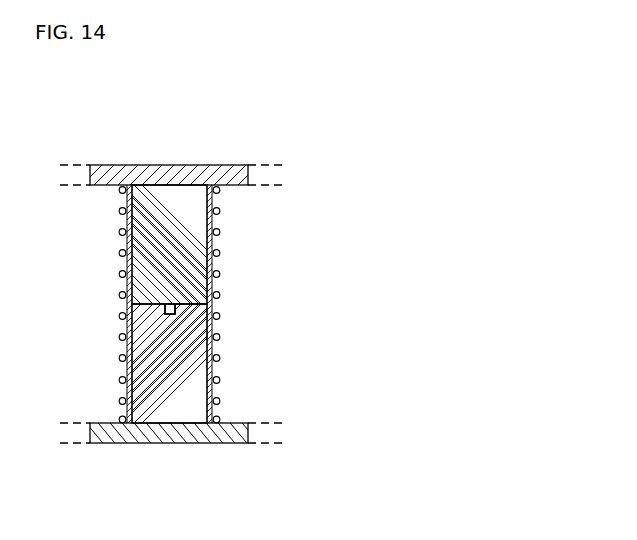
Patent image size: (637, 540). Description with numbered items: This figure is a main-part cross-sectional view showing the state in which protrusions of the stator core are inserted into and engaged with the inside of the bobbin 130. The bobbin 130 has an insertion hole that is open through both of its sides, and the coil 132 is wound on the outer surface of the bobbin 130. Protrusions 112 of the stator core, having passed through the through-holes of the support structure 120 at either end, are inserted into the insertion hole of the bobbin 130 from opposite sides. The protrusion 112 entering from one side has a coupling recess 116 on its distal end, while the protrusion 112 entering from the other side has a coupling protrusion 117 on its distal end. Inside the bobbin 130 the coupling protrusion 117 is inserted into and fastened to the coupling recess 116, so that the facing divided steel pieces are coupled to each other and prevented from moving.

The protrusion 112 is at (157, 262).
The coupling recess 116 is at (174, 313).
The coupling protrusion 117 is at (174, 304).
The support structure 120 is at (193, 166).
The bobbin 130 is at (220, 373).
The coil 132 is at (220, 232).